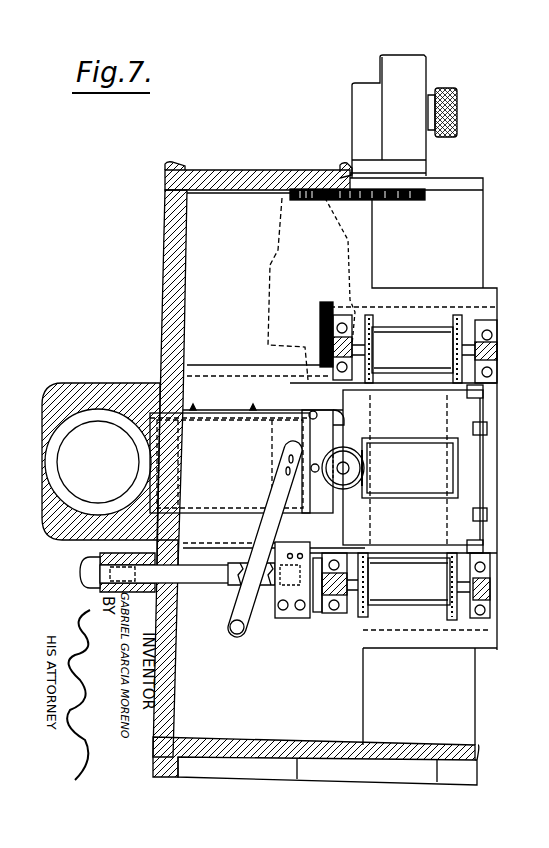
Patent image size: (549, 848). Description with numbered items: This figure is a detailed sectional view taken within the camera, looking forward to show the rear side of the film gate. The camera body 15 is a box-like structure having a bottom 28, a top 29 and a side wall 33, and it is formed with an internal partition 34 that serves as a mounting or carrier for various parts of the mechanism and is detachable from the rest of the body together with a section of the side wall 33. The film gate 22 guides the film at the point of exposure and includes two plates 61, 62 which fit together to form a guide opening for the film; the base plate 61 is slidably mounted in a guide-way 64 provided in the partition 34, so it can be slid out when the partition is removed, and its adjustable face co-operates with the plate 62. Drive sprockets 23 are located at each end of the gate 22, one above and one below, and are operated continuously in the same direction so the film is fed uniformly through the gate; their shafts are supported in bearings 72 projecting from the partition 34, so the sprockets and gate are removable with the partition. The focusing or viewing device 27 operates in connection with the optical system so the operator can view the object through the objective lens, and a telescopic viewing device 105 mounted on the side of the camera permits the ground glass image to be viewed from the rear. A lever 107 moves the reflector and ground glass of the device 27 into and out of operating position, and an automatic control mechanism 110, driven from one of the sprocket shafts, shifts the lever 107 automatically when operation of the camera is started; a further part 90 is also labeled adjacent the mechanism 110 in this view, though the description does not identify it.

The body 15 is at (478, 750).
The gate 22 is at (470, 487).
The drive sprockets 23 is at (424, 353).
The focusing or viewing device 27 is at (227, 473).
The bottom 28 is at (258, 752).
The top 29 is at (236, 172).
The side wall 33 is at (168, 312).
The internal partition 34 is at (195, 250).
The base plate 61 is at (437, 446).
The plate 62 is at (413, 467).
The guide-way 64 is at (404, 470).
The bearings 72 is at (497, 352).
The pin 90 is at (352, 612).
The telescopic viewing device 105 is at (80, 385).
The lever 107 is at (240, 608).
The automatic control mechanism 110 is at (305, 612).